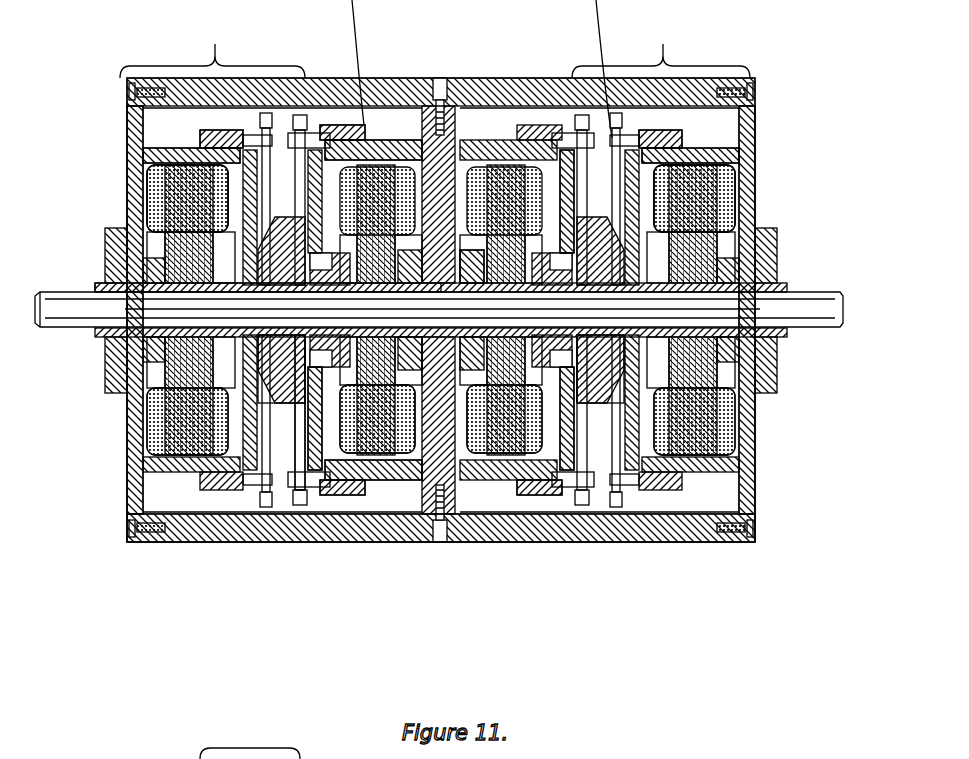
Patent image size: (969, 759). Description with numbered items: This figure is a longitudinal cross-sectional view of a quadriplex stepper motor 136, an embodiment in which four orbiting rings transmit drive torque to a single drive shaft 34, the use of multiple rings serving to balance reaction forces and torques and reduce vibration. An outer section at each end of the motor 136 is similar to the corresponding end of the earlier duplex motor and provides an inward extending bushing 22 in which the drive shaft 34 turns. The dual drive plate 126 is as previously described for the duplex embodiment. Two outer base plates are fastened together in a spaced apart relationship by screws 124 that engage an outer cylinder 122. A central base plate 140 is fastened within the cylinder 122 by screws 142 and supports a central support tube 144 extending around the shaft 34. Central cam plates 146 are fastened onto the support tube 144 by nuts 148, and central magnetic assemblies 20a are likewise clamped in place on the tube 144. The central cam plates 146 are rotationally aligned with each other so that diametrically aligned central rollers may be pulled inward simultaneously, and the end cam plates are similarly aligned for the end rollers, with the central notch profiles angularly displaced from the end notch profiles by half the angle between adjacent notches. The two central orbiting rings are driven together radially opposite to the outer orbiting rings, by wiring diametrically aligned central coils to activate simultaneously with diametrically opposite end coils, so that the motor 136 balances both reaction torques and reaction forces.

The outer cylinder 122 is at (358, 142).
The central base plate 140 is at (398, 140).
The screws 142 is at (468, 268).
The central support tube 144 is at (560, 195).
The bushing 22 is at (109, 283).
The drive shaft 34 is at (96, 328).
The motor 136 is at (111, 580).
The screws 124 is at (160, 544).
The dual drive plate 126 is at (304, 488).
The central cam plates 146 is at (347, 496).
The central magnetic assemblies 20a is at (412, 500).
The nuts 148 is at (561, 500).